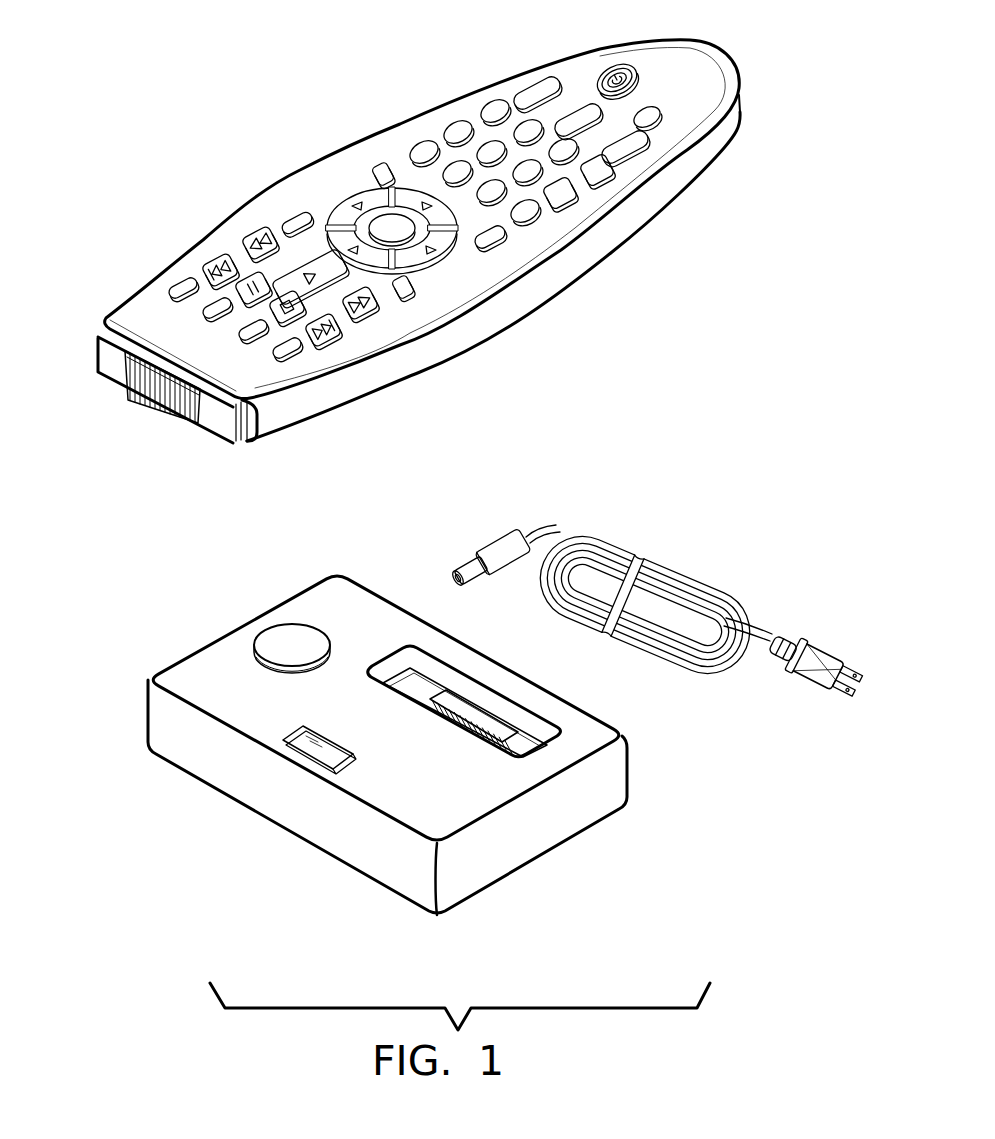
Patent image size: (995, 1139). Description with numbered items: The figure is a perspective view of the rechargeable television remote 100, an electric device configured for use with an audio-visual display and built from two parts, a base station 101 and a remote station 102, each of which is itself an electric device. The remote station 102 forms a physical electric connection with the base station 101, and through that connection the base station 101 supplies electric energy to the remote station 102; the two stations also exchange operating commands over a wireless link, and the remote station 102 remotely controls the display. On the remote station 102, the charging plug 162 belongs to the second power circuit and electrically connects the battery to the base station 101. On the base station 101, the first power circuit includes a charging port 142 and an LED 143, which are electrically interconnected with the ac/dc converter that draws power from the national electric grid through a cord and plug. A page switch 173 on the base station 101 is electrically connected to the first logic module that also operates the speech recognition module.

The rechargeable television remote 100 is at (143, 131).
The base station 101 is at (560, 843).
The remote station 102 is at (404, 121).
The charging port 142 is at (568, 694).
The LED 143 is at (320, 760).
The charging plug 162 is at (163, 392).
The page switch 173 is at (296, 636).